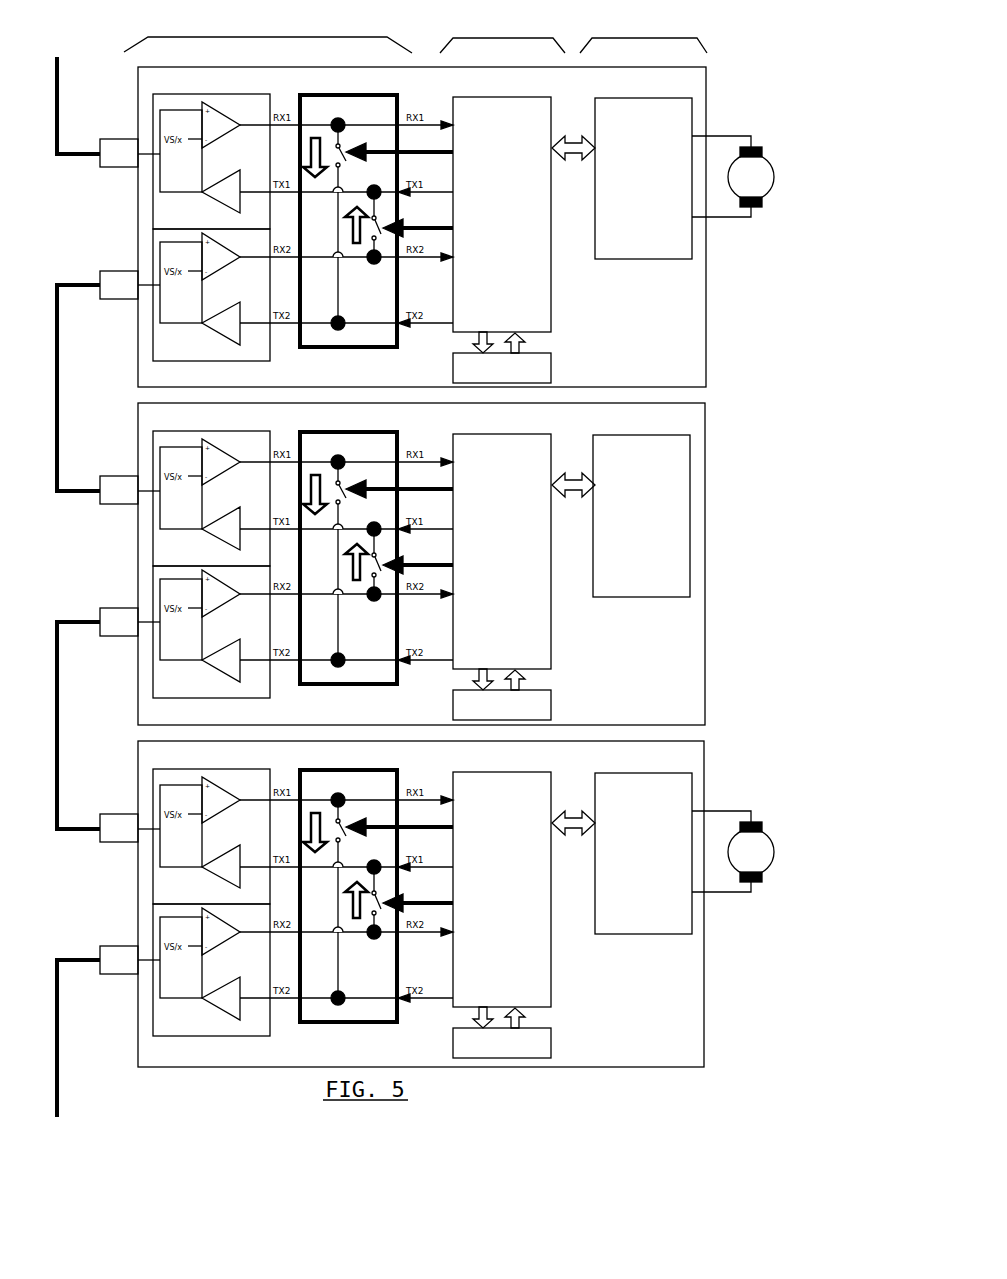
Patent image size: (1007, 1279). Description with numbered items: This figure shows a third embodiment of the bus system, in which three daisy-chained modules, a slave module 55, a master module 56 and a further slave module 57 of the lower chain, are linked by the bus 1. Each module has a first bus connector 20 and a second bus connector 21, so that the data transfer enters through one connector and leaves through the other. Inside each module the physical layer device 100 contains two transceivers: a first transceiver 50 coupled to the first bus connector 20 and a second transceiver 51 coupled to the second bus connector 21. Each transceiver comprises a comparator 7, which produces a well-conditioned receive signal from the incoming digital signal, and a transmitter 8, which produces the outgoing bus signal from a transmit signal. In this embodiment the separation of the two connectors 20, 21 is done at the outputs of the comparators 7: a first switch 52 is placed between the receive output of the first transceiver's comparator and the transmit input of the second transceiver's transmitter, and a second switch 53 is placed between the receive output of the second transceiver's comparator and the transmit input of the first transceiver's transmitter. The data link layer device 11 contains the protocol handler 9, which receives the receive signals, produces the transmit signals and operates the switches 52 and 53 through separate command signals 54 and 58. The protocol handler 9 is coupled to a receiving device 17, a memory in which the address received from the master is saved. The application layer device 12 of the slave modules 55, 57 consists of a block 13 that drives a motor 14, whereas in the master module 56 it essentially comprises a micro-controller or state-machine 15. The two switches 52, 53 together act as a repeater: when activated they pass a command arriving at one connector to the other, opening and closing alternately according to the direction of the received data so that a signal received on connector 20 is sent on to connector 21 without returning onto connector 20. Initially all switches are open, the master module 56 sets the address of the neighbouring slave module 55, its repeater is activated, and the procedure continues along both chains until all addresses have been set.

The bus 1 is at (45, 701).
The physical layer device 100 is at (287, 43).
The data link layer device 11 is at (497, 45).
The application layer device 12 is at (637, 47).
The first bus connector 20 is at (117, 479).
The second bus connector 21 is at (117, 607).
The first transceiver 50 is at (185, 489).
The second transceiver 51 is at (186, 632).
The comparator 7 is at (221, 539).
The transmitter 8 is at (221, 603).
The first switch 52 is at (359, 555).
The second switch 53 is at (361, 575).
The command signal 54 is at (416, 503).
The command signal 58 is at (435, 582).
The protocol handler 9 is at (502, 552).
The receiving device 17 is at (502, 705).
The motor drive block 13 is at (643, 516).
The micro-controller or state-machine 15 is at (633, 526).
The motor 14 is at (746, 514).
The slave module 55 is at (692, 363).
The master module 56 is at (690, 700).
The slave module 57 is at (688, 1038).